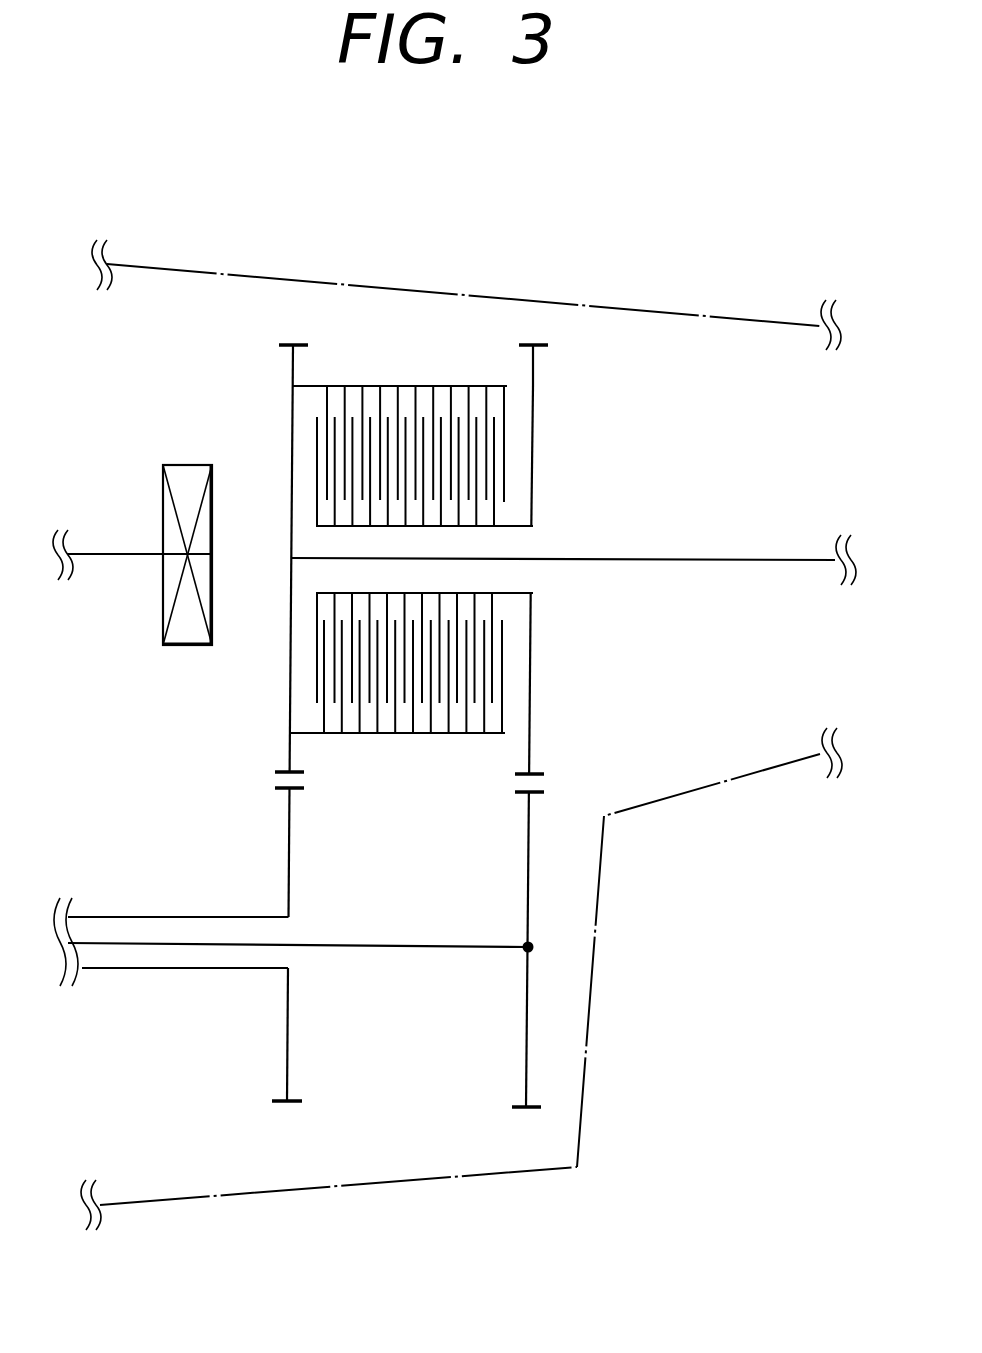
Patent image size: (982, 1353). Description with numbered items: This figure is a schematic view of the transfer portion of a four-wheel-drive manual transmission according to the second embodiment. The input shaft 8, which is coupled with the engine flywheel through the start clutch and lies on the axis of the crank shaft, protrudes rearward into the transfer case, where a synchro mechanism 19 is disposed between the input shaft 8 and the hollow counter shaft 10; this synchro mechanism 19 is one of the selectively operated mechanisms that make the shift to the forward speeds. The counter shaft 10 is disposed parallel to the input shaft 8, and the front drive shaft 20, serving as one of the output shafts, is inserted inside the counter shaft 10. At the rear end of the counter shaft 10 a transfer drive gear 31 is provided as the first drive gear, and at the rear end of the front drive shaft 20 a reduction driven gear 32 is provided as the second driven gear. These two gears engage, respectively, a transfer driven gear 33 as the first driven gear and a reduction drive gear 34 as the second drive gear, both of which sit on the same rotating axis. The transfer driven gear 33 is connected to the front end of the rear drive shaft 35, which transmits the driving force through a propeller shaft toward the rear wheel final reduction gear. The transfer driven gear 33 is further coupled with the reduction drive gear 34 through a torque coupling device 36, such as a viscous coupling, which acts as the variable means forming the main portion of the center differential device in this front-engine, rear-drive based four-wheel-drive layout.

The input shaft 8 is at (108, 554).
The hollow counter shaft 10 is at (130, 968).
The synchro mechanism 19 is at (188, 448).
The front drive shaft 20 is at (205, 943).
The transfer drive gear 31 is at (287, 1105).
The reduction driven gear 32 is at (526, 1110).
The transfer driven gear 33 is at (293, 345).
The reduction drive gear 34 is at (533, 345).
The rear drive shaft 35 is at (687, 560).
The torque coupling device 36 is at (407, 373).